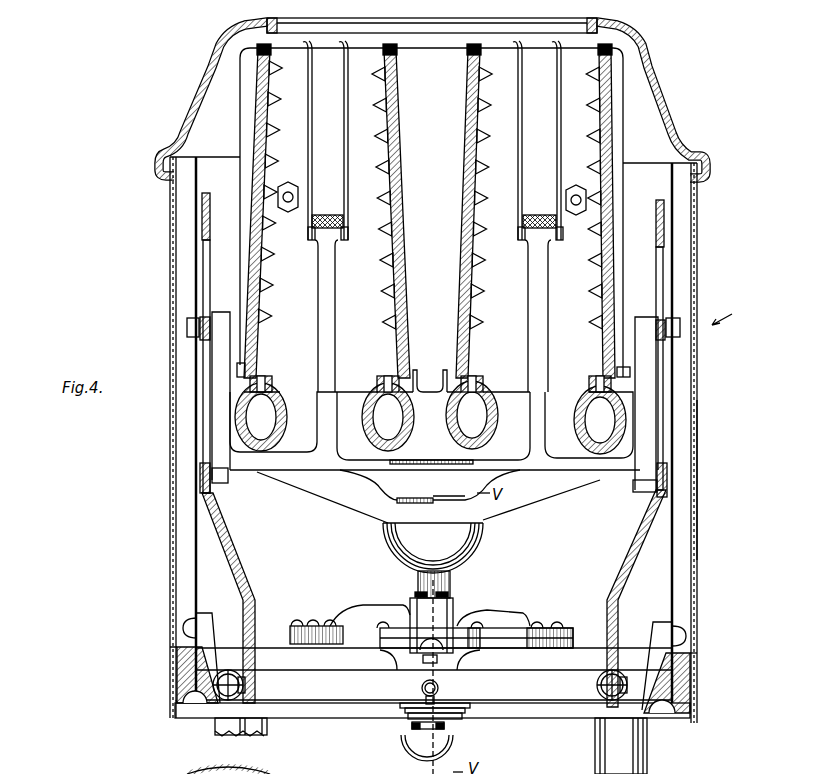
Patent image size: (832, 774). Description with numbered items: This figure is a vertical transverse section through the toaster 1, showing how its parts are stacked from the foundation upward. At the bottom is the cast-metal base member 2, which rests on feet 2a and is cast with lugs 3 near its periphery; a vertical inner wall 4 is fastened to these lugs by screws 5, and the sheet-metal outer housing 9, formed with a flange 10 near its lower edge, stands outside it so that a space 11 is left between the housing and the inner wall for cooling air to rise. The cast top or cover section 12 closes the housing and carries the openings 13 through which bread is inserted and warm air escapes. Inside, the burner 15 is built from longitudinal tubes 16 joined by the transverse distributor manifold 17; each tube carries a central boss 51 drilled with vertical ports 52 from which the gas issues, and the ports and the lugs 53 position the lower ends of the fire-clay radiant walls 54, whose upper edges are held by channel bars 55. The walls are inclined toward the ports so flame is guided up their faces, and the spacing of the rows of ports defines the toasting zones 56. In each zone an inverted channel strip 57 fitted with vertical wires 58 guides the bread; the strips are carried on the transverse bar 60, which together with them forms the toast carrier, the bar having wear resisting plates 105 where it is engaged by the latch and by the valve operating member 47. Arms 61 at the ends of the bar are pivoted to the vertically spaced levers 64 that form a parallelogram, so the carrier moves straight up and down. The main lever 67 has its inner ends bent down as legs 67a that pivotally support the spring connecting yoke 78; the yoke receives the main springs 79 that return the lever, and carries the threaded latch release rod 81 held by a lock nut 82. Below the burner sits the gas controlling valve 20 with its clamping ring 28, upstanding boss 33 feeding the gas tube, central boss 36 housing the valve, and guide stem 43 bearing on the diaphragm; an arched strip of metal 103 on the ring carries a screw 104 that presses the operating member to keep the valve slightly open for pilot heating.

The toaster 1 is at (728, 313).
The base member 2 is at (680, 688).
The feet 2a is at (267, 727).
The lugs 3 is at (205, 617).
The vertical inner wall 4 is at (190, 574).
The screws 5 is at (183, 628).
The outer housing 9 is at (698, 485).
The flange 10 is at (176, 648).
The space 11 is at (193, 260).
The top or cover section 12 is at (660, 88).
The openings 13 is at (283, 18).
The burner 15 is at (272, 392).
The tubes 16 is at (288, 420).
The distributor manifold 17 is at (322, 503).
The gas controlling valve 20 is at (497, 628).
The clamping ring 28 is at (293, 626).
The upstanding boss 33 is at (451, 580).
The central boss 36 is at (468, 718).
The guide stem 43 is at (422, 642).
The operating member 47 is at (447, 612).
The boss 51 is at (270, 378).
The vertical ports 52 is at (261, 376).
The lugs 53 is at (240, 363).
The radiant walls 54 is at (268, 288).
The channel bars 55 is at (270, 50).
The toasting zones 56 is at (431, 195).
The inverted channel strip 57 is at (338, 214).
The wires 58 is at (344, 88).
The bar 60 is at (530, 470).
The arms 61 is at (276, 386).
The levers 64 is at (200, 330).
The main lever 67 is at (210, 268).
The legs 67a is at (250, 558).
The spring connecting yoke 78 is at (525, 680).
The main springs 79 is at (316, 684).
The latch release rod 81 is at (424, 696).
The lock nut 82 is at (438, 686).
The strip of metal 103 is at (365, 608).
The screw 104 is at (410, 567).
The wear resisting plates 105 is at (440, 452).